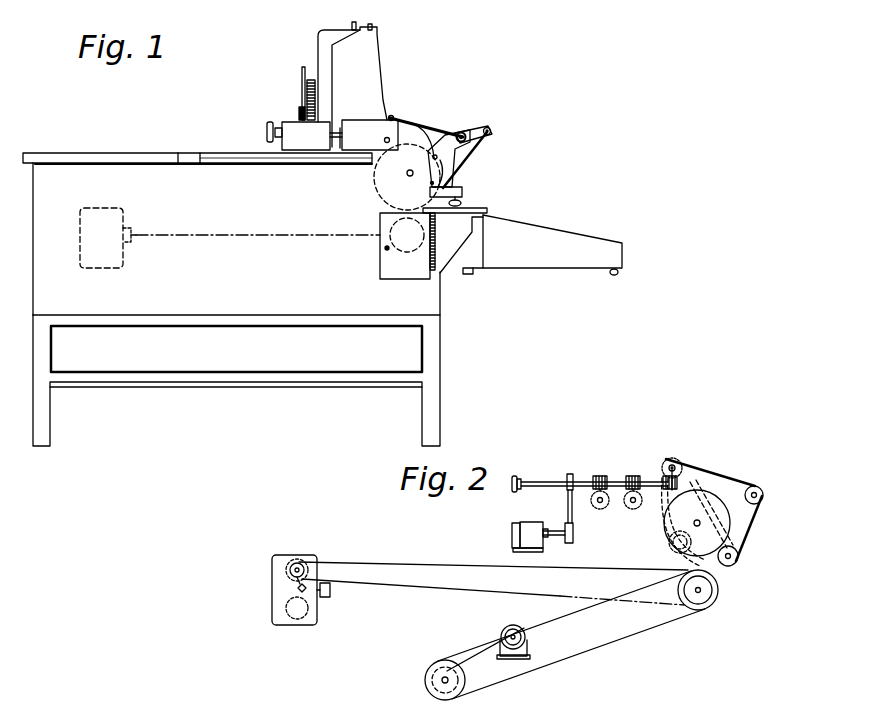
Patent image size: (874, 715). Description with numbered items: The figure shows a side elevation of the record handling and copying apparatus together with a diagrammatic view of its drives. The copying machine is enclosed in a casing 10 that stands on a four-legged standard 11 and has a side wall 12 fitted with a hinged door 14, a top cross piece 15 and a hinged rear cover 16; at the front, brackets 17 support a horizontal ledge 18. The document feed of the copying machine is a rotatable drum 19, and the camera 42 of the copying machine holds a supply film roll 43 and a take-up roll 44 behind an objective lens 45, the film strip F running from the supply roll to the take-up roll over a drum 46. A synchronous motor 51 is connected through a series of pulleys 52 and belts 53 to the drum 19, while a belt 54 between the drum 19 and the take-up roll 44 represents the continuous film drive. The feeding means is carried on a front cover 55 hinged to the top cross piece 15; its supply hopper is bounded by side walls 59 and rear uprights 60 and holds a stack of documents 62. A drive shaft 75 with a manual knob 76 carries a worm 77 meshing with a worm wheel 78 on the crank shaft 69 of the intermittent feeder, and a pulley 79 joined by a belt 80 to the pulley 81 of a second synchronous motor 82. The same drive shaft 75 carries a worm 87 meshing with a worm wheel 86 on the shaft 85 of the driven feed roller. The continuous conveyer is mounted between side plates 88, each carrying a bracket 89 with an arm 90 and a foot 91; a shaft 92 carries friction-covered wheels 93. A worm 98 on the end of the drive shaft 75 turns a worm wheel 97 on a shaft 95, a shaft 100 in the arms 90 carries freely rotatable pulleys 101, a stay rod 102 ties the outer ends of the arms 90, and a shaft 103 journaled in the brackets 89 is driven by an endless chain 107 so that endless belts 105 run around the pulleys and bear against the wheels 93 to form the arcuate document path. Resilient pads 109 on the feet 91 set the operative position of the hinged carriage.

In FIG. 1, the casing 10 is at (200, 315).
In FIG. 1, the four-legged standard 11 is at (424, 407).
In FIG. 1, the side wall 12 is at (154, 239).
In FIG. 1, the hinged door 14 is at (380, 272).
In FIG. 1, the top cross piece 15 is at (186, 153).
In FIG. 1, the hinged rear cover 16 is at (107, 153).
In FIG. 1, the bracket 17 is at (447, 255).
In FIG. 1, the horizontal ledge 18 is at (488, 209).
In FIG. 1, the drum 19 is at (389, 232).
In FIG. 2, the drum 19 is at (720, 590).
In FIG. 1, the camera 42 is at (80, 237).
In FIG. 2, the camera 42 is at (272, 570).
In FIG. 2, the supply film roll 43 is at (292, 620).
In FIG. 2, the take-up roll 44 is at (294, 560).
In FIG. 2, the objective lens 45 is at (325, 597).
In FIG. 2, the drum 46 is at (304, 592).
In FIG. 2, the motor 51 is at (506, 626).
In FIG. 2, the pulleys 52 is at (431, 666).
In FIG. 2, the belts 53 is at (575, 655).
In FIG. 2, the belt 54 is at (383, 562).
In FIG. 1, the front cover 55 is at (242, 153).
In FIG. 1, the side walls 59 is at (318, 38).
In FIG. 1, the rear uprights 60 is at (302, 95).
In FIG. 1, the documents 62 is at (306, 108).
In FIG. 2, the crank shaft 69 is at (596, 504).
In FIG. 1, the drive shaft 75 is at (338, 150).
In FIG. 2, the drive shaft 75 is at (548, 482).
In FIG. 1, the knob 76 is at (270, 122).
In FIG. 2, the knob 76 is at (516, 476).
In FIG. 2, the worm 77 is at (600, 477).
In FIG. 2, the worm wheel 78 is at (604, 512).
In FIG. 2, the pulley 79 is at (571, 476).
In FIG. 2, the belt 80 is at (567, 508).
In FIG. 2, the pulley 81 is at (574, 541).
In FIG. 2, the motor 82 is at (512, 533).
In FIG. 2, the shaft 85 is at (638, 506).
In FIG. 2, the worm wheel 86 is at (632, 511).
In FIG. 2, the worm 87 is at (633, 478).
In FIG. 1, the side plates 88 is at (416, 139).
In FIG. 1, the bracket 89 is at (450, 160).
In FIG. 1, the arm 90 is at (487, 128).
In FIG. 1, the foot 91 is at (463, 183).
In FIG. 1, the shaft 92 is at (407, 175).
In FIG. 1, the wheels 93 is at (376, 182).
In FIG. 2, the wheels 93 is at (667, 530).
In FIG. 2, the shaft 95 is at (678, 466).
In FIG. 2, the worm wheel 97 is at (675, 460).
In FIG. 2, the worm 98 is at (663, 478).
In FIG. 1, the shaft 100 is at (462, 131).
In FIG. 2, the pulleys 101 is at (760, 490).
In FIG. 1, the stay rod 102 is at (493, 130).
In FIG. 2, the shaft 103 is at (740, 556).
In FIG. 1, the endless belts 105 is at (437, 124).
In FIG. 2, the endless belts 105 is at (740, 478).
In FIG. 2, the endless chain 107 is at (700, 472).
In FIG. 1, the resilient pads 109 is at (468, 194).
In FIG. 2, the film strip F is at (294, 590).